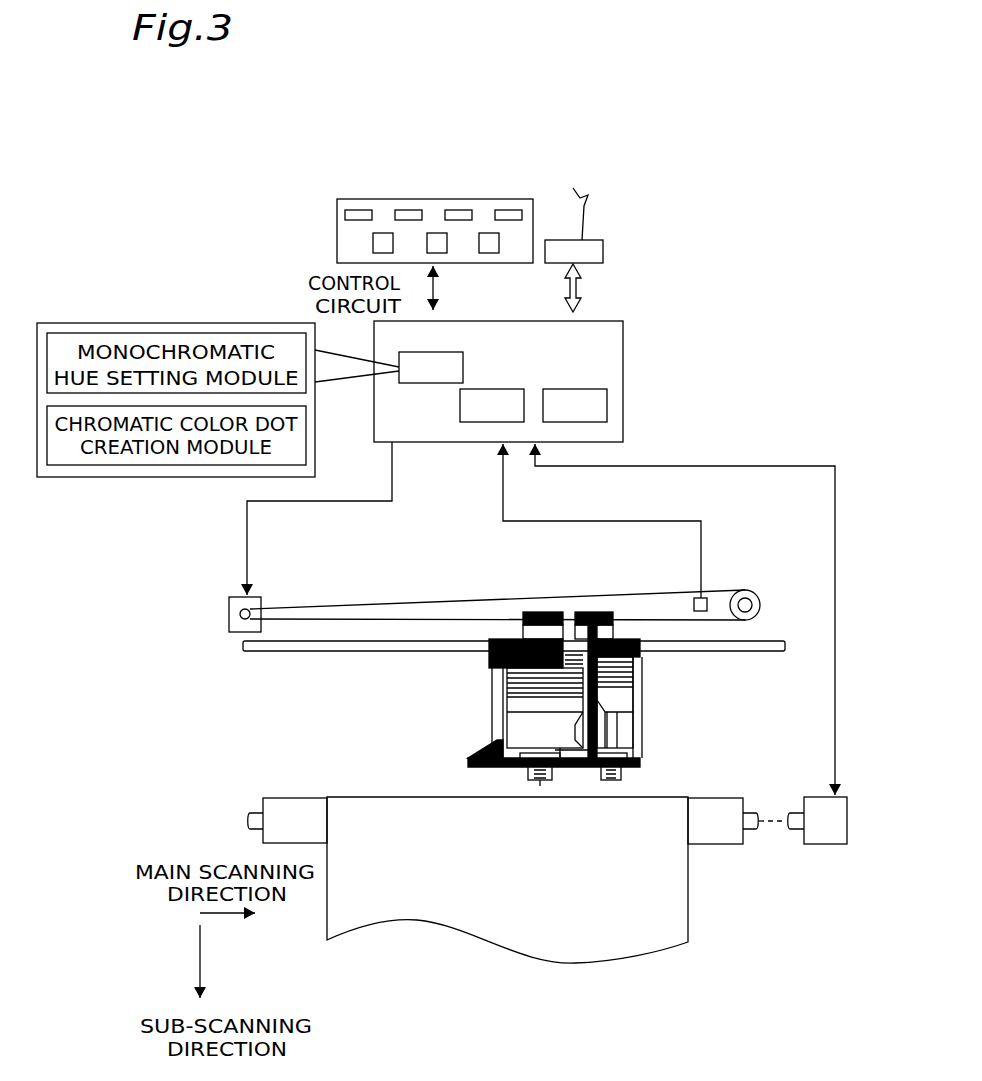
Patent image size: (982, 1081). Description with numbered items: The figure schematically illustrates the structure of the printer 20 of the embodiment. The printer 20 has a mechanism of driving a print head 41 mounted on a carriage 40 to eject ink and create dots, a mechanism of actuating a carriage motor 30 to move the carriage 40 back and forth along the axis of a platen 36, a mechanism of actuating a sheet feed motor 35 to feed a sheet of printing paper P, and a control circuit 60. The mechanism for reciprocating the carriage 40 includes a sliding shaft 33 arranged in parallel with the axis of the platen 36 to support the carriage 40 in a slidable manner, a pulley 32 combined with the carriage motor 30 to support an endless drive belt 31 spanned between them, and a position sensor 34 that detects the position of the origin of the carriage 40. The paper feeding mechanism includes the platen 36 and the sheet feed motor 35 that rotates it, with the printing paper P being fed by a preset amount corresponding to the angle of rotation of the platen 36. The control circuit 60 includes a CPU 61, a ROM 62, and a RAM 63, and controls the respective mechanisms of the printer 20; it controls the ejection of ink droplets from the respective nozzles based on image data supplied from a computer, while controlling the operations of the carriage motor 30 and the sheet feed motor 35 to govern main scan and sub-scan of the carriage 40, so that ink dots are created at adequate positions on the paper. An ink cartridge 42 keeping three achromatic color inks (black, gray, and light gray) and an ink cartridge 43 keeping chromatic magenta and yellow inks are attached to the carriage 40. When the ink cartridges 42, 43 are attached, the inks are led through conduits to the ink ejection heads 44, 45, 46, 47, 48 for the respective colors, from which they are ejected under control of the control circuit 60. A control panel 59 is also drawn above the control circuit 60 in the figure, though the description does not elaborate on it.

The printer 20 is at (543, 903).
The carriage motor 30 is at (232, 633).
The endless drive belt 31 is at (344, 605).
The pulley 32 is at (730, 590).
The sliding shaft 33 is at (335, 651).
The position sensor 34 is at (694, 600).
The sheet feed motor 35 is at (823, 845).
The platen 36 is at (715, 845).
The carriage 40 is at (580, 734).
The print head 41 is at (640, 757).
The ink cartridge 42 is at (528, 733).
The ink cartridge 43 is at (620, 702).
The ink ejection head 44 is at (528, 805).
The ink ejection head 45 is at (528, 805).
The ink ejection head 46 is at (538, 802).
The ink ejection head 47 is at (620, 802).
The ink ejection head 48 is at (612, 785).
The control panel 59 is at (476, 199).
The control circuit 60 is at (533, 349).
The CPU 61 is at (448, 352).
The ROM 62 is at (508, 389).
The RAM 63 is at (590, 389).
The printing paper P is at (688, 922).